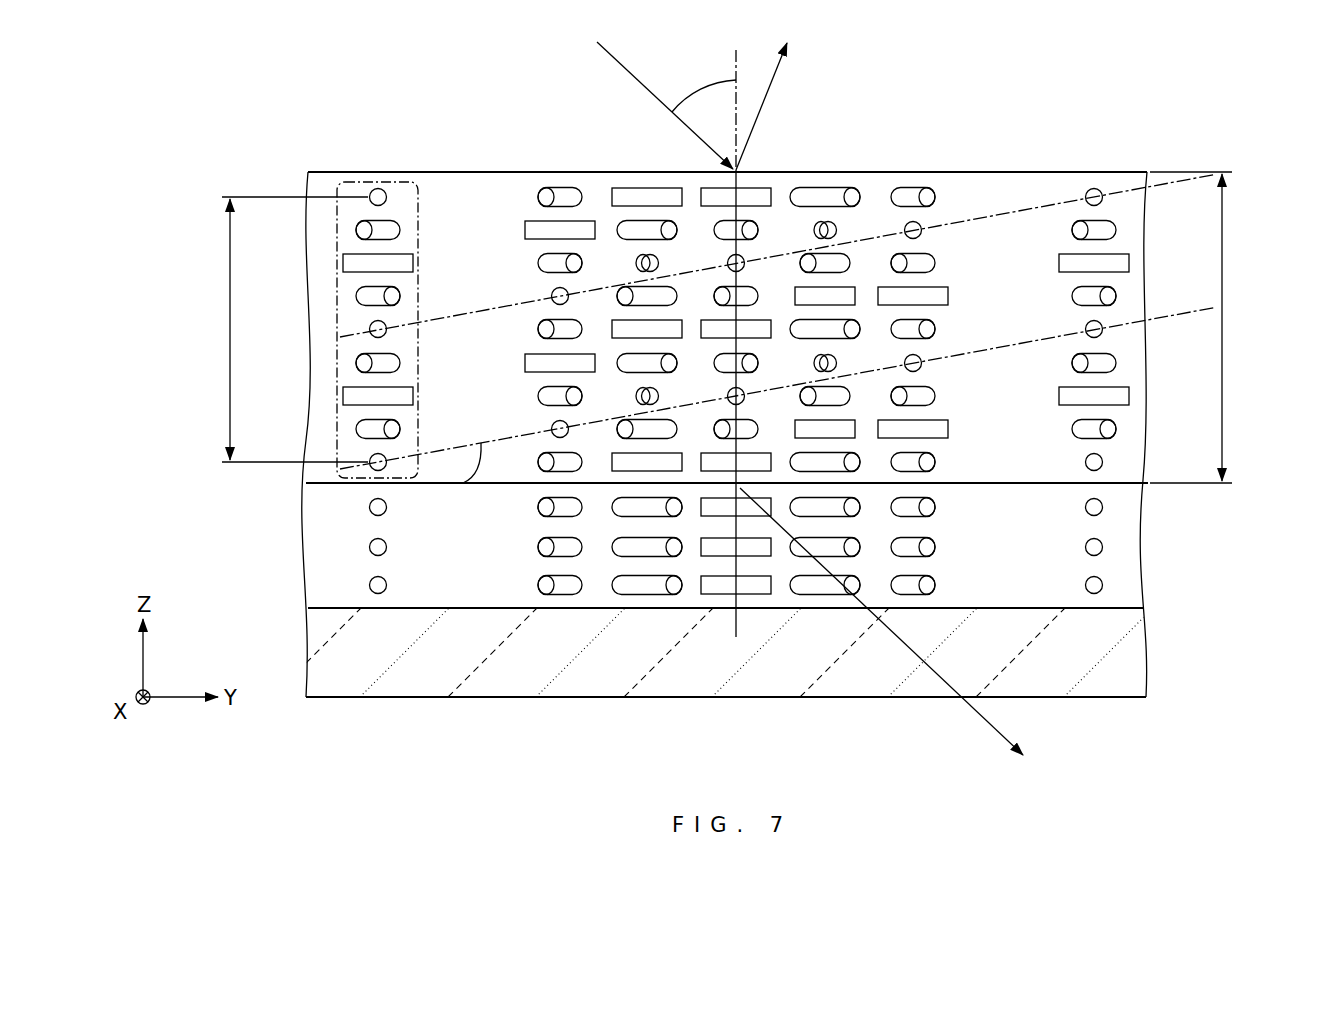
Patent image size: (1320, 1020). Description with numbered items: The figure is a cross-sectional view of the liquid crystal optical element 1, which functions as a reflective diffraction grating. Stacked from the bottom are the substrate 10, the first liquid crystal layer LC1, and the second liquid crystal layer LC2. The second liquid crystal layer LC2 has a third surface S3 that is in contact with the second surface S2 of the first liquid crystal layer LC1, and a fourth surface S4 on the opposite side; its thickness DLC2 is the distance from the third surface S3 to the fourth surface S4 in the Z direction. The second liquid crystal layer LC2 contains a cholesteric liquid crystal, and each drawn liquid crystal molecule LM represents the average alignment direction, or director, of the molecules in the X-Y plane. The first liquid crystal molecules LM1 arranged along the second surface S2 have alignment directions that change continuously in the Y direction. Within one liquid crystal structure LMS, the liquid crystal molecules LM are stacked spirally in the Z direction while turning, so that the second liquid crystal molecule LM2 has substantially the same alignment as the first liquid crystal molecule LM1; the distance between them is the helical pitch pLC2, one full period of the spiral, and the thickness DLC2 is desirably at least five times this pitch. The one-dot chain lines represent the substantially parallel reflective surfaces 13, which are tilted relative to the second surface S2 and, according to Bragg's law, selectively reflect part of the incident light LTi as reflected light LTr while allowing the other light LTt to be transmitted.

The liquid crystal optical element 1 is at (1187, 103).
The substrate 10 is at (1136, 658).
The reflective surfaces 13 is at (1043, 333).
The first liquid crystal layer LC1 is at (1136, 572).
The second liquid crystal layer LC2 is at (952, 185).
The liquid crystal molecule LM is at (353, 292).
The first liquid crystal molecules LM1 is at (935, 462).
The second liquid crystal molecule LM2 is at (546, 188).
The liquid crystal structure LMS is at (335, 182).
The second surface S2 is at (1106, 483).
The third surface S3 is at (1038, 486).
The fourth surface S4 is at (877, 171).
The helical pitch pLC2 is at (269, 329).
The thickness of the second liquid crystal layer DLC2 is at (1220, 327).
The incident light LTi is at (612, 56).
The reflected light LTr is at (774, 78).
The transmitted light LTt is at (983, 720).